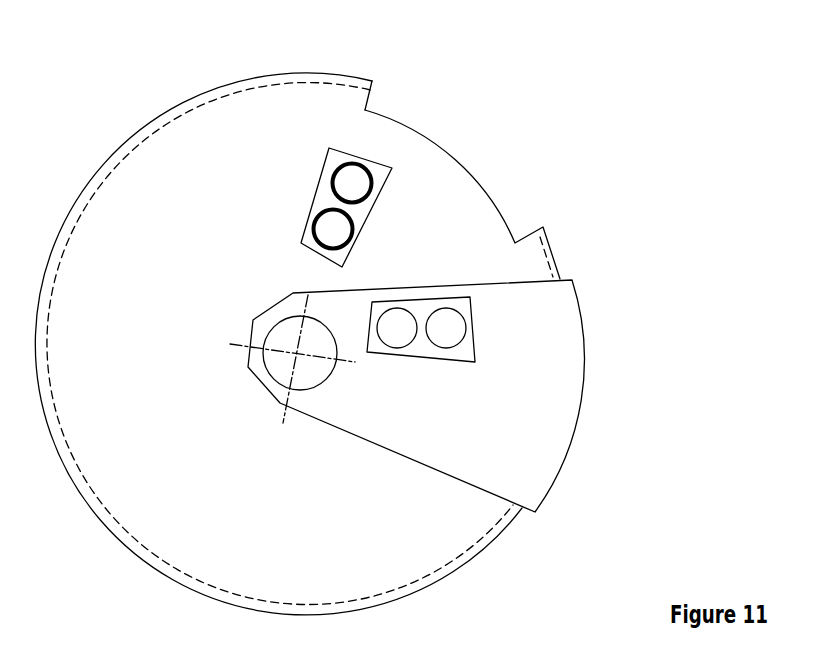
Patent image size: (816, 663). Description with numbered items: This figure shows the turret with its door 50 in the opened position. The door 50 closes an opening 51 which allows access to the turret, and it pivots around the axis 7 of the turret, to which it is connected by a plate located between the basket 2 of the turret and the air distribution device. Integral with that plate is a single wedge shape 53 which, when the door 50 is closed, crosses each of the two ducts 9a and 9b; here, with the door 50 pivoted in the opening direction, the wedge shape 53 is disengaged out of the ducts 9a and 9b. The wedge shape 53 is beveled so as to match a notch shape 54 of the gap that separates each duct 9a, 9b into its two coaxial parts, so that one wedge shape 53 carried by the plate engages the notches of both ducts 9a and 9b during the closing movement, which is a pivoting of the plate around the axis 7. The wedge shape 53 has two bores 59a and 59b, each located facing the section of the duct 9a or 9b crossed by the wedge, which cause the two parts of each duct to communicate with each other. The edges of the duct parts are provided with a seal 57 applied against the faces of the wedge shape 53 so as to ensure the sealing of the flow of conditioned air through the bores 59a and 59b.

The basket 2 is at (170, 170).
The axis 7 is at (290, 353).
The duct 9a is at (327, 220).
The duct 9b is at (349, 191).
The door 50 is at (567, 453).
The opening 51 is at (466, 170).
The wedge shape 53 is at (504, 359).
The notch shape 54 is at (342, 148).
The seal 57 is at (320, 148).
The bore 59a is at (393, 338).
The bore 59b is at (444, 340).